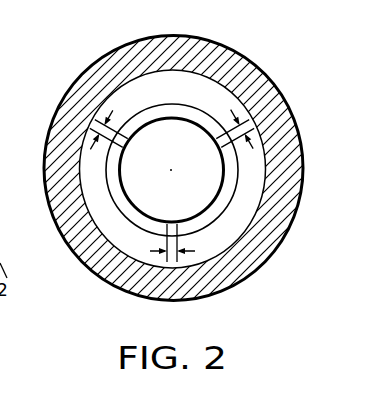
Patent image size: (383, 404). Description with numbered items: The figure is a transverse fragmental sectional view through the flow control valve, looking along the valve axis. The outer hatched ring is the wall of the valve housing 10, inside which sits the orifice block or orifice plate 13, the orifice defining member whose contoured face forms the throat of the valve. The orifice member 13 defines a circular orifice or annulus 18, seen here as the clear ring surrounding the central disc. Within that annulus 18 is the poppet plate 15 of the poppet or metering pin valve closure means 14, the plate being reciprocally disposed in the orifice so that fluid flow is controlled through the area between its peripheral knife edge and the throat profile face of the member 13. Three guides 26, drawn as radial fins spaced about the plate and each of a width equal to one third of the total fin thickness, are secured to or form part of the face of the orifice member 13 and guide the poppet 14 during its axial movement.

The valve housing 10 is at (119, 301).
The orifice block or orifice plate 13 is at (230, 237).
The poppet or metering pin valve closure means 14 is at (163, 188).
The poppet plate 15 is at (173, 160).
The orifice or annulus 18 is at (158, 106).
The guides 26 is at (94, 125).